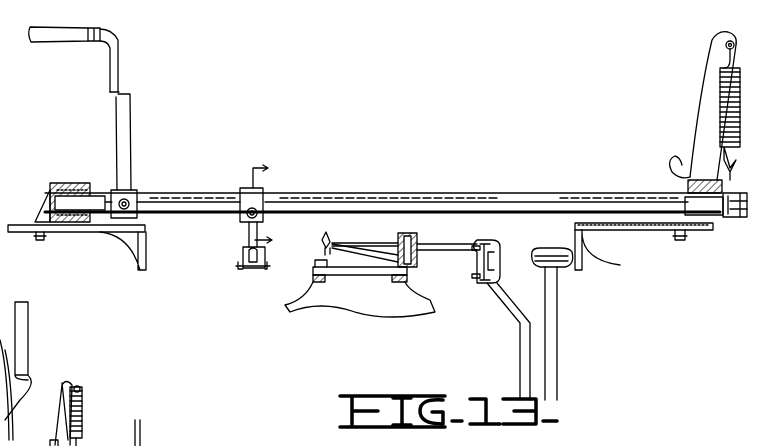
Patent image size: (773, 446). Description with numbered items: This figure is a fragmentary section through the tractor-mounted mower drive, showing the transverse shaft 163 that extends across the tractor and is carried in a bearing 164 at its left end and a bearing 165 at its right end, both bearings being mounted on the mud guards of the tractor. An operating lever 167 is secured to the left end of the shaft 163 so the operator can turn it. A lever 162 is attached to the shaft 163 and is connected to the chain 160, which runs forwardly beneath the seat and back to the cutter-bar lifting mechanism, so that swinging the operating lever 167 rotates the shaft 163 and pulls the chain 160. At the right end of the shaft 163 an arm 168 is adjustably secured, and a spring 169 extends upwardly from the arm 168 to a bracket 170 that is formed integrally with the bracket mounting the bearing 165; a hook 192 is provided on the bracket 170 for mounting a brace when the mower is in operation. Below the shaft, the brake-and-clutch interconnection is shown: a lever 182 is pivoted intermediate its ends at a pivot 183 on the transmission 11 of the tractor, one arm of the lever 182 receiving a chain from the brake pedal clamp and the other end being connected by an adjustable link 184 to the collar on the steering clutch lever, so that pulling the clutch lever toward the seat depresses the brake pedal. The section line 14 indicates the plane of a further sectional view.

The transmission 11 is at (430, 315).
The section line 14 is at (249, 206).
The chain 160 is at (240, 268).
The lever 162 is at (262, 268).
The transverse shaft 163 is at (506, 193).
The bearing 164 is at (70, 183).
The bearing 165 is at (690, 188).
The operating lever 167 is at (130, 70).
The arm 168 is at (745, 217).
The spring 169 is at (725, 58).
The bracket 170 is at (700, 82).
The lever 182 is at (470, 255).
The pivot 183 is at (411, 235).
The adjustable link 184 is at (331, 240).
The hook 192 is at (50, 440).